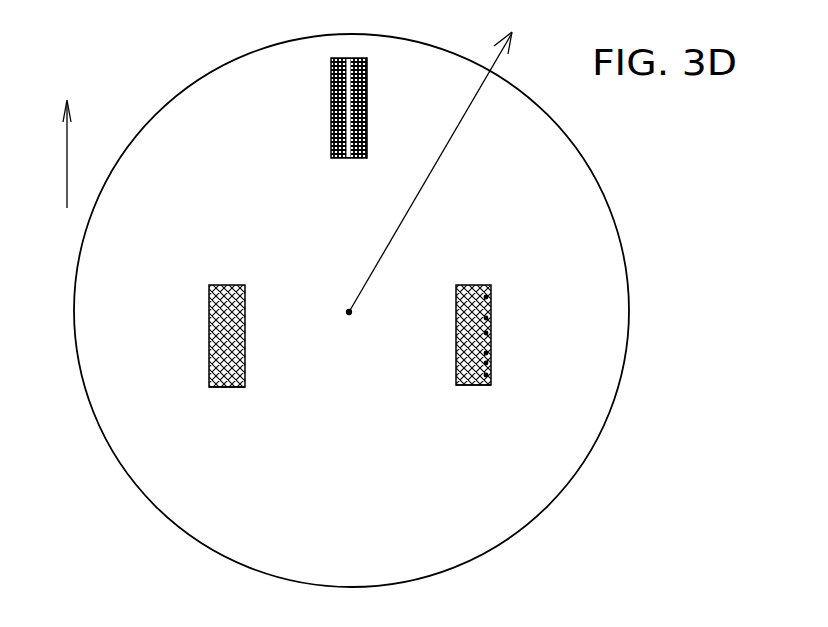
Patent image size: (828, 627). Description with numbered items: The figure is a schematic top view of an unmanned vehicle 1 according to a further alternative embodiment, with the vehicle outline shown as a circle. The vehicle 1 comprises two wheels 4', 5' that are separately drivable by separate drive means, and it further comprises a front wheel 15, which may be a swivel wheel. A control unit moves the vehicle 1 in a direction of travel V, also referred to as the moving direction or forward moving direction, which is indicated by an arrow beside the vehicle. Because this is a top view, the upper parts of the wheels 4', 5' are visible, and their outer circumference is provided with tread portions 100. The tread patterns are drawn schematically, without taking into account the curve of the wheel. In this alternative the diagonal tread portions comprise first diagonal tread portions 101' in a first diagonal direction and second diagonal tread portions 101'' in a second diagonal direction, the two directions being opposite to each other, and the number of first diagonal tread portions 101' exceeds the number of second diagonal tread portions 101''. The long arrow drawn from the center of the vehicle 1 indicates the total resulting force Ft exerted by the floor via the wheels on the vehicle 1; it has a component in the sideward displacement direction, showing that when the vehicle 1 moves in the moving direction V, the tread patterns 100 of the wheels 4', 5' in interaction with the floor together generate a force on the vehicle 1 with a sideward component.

The vehicle 1 is at (168, 58).
The front wheel 15 is at (367, 58).
The wheel 5' is at (221, 303).
The wheel 4' is at (480, 302).
The first diagonal tread portions 101' is at (542, 292).
The second diagonal tread portions 101'' is at (544, 353).
The tread portions 100 is at (217, 387).
The direction of travel V is at (53, 154).
The total resulting force Ft is at (435, 165).